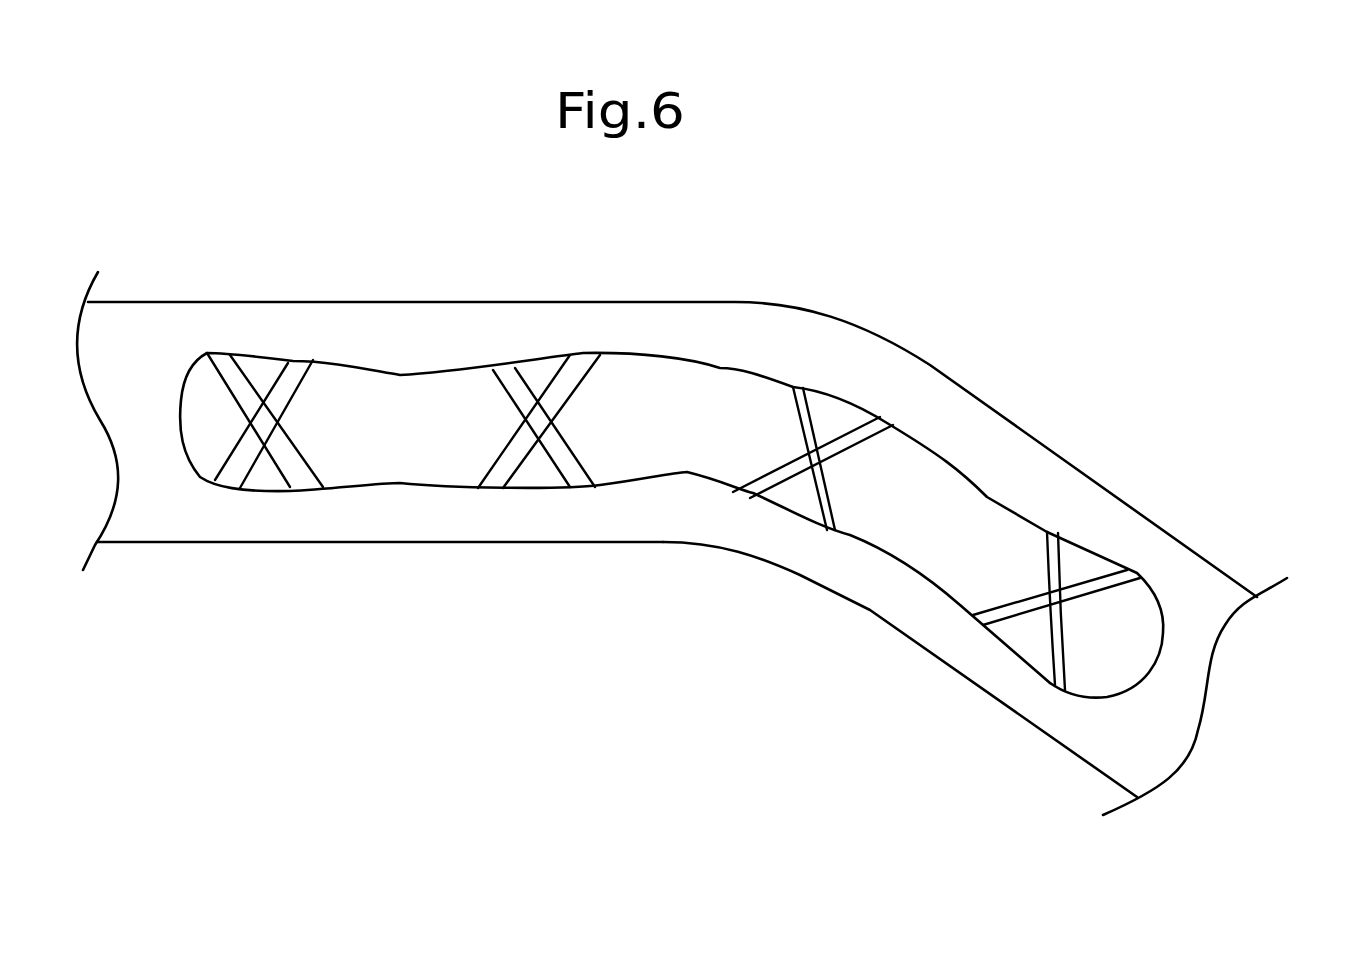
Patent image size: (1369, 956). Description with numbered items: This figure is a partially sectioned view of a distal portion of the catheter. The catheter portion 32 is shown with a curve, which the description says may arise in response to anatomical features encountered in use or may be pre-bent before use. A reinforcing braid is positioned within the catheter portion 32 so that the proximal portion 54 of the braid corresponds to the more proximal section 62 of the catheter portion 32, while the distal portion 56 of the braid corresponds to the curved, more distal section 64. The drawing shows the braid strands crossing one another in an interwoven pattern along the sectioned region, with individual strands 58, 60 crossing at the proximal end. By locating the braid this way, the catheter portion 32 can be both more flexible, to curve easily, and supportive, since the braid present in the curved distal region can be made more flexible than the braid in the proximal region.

The distal portion 32 is at (840, 262).
The proximal portion of the braid 54 is at (290, 354).
The distal portion of the braid 56 is at (1147, 568).
The first cross web strand 58 is at (233, 470).
The second cross web strand 60 is at (298, 473).
The proximal section 62 is at (342, 556).
The distal section 64 is at (798, 547).